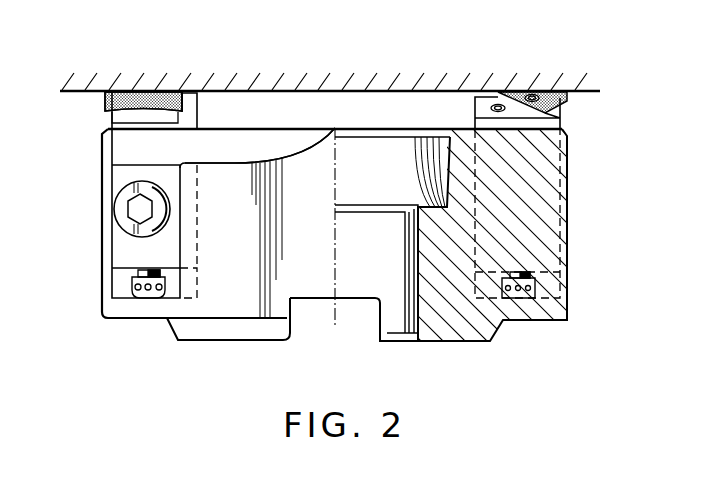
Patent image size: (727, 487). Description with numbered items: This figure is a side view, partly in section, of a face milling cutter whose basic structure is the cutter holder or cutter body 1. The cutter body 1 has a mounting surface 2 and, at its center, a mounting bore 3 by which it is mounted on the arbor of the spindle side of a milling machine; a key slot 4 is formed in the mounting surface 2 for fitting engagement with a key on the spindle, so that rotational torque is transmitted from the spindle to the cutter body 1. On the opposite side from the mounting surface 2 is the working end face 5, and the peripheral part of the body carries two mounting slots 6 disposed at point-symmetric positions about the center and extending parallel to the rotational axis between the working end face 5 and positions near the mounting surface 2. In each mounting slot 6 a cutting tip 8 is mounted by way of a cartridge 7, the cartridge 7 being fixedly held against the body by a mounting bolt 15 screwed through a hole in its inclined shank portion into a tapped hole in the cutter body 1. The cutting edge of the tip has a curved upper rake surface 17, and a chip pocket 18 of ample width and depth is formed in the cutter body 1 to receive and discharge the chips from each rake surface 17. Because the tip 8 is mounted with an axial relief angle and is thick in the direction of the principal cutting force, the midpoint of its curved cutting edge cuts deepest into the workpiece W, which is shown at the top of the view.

The workpiece W is at (585, 92).
The upper rake surface 17 is at (120, 91).
The cutting tip 8 is at (158, 90).
The cartridge 7 is at (190, 105).
The working end face 5 is at (285, 128).
The chip pocket 18 is at (242, 163).
The mounting surface 2 is at (223, 342).
The key slot 4 is at (307, 310).
The mounting bore 3 is at (417, 248).
The cutter body 1 is at (570, 209).
The mounting bolt 15 is at (118, 207).
The mounting slot 6 is at (195, 283).